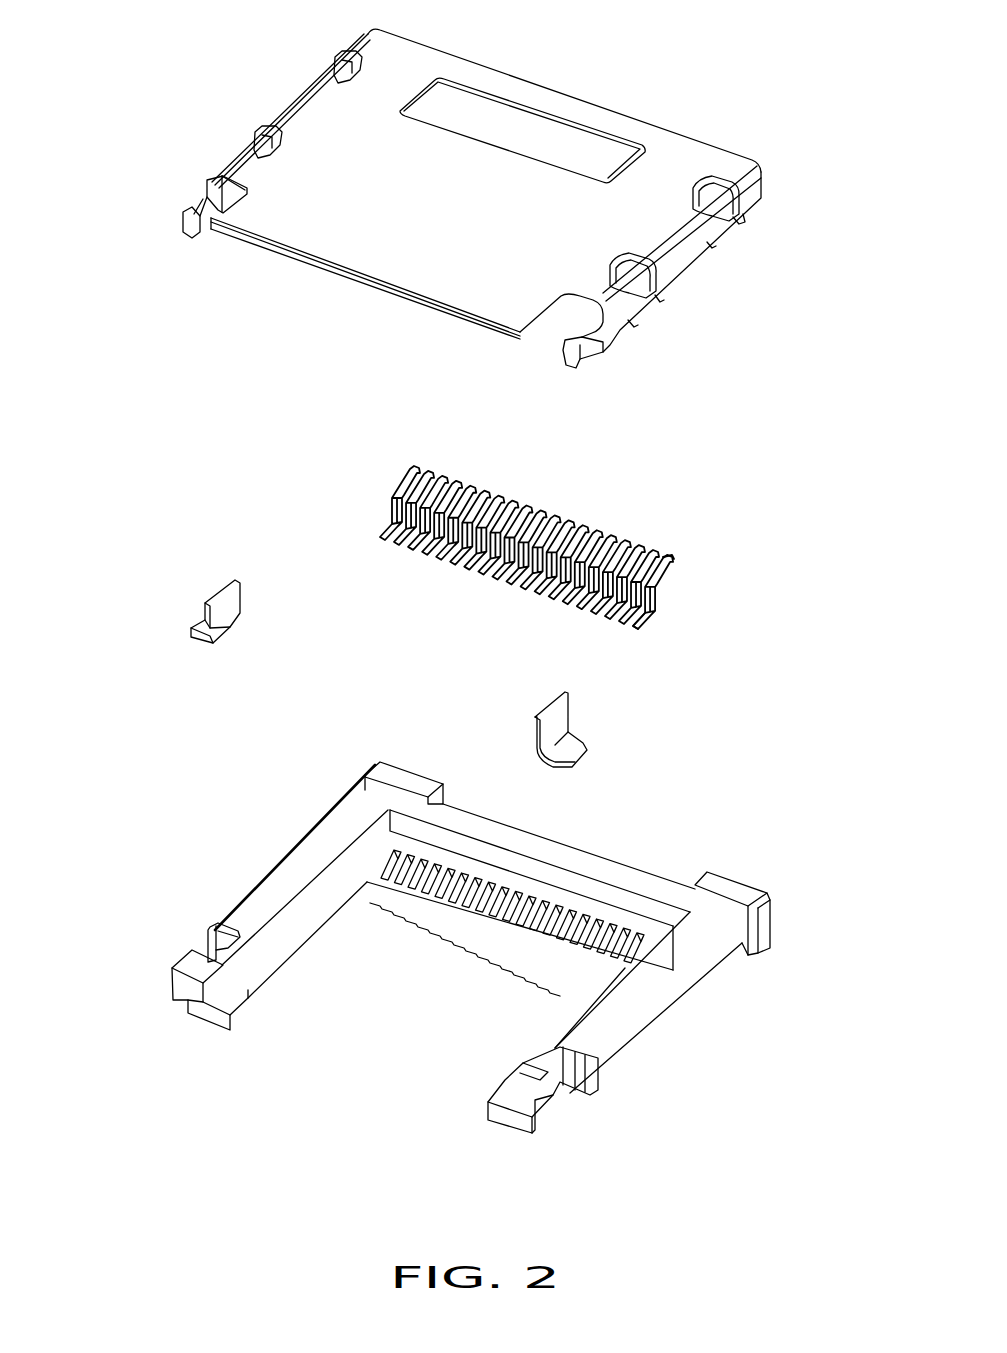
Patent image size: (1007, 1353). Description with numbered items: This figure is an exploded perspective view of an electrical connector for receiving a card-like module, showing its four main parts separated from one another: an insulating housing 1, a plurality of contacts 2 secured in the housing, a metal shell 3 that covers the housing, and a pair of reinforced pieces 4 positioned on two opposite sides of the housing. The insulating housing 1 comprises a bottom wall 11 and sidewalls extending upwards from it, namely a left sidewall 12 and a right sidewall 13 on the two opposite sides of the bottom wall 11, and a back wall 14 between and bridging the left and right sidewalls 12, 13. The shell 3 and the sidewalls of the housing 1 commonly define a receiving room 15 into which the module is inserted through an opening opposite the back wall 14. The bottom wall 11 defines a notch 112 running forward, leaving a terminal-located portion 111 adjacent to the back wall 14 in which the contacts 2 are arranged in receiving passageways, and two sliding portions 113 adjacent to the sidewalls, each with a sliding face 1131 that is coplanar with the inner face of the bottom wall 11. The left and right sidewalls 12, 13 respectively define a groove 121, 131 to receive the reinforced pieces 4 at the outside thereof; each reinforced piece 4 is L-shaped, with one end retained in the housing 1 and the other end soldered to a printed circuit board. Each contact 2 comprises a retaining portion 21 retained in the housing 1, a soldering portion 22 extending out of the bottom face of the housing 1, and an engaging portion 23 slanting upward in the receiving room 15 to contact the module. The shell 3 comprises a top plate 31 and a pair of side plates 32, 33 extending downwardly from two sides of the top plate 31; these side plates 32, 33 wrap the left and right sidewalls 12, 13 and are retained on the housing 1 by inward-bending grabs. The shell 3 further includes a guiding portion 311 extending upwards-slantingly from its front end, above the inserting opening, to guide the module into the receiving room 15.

The insulating housing 1 is at (431, 960).
The bottom wall 11 is at (457, 905).
The terminal-located portion 111 is at (533, 912).
The notch 112 is at (357, 967).
The sliding portions 113 is at (248, 1003).
The sliding face 1131 is at (260, 960).
The left sidewall 12 is at (308, 865).
The groove 121 is at (218, 932).
The right sidewall 13 is at (660, 962).
The groove 131 is at (555, 1065).
The back wall 14 is at (558, 857).
The receiving room 15 is at (548, 998).
The contacts 2 is at (520, 561).
The retaining portion 21 is at (657, 590).
The soldering portion 22 is at (643, 620).
The engaging portion 23 is at (670, 552).
The metal shell 3 is at (469, 199).
The top plate 31 is at (520, 92).
The guiding portion 311 is at (433, 293).
The side plate 32 is at (297, 90).
The side plate 33 is at (680, 268).
The reinforced pieces 4 is at (186, 574).